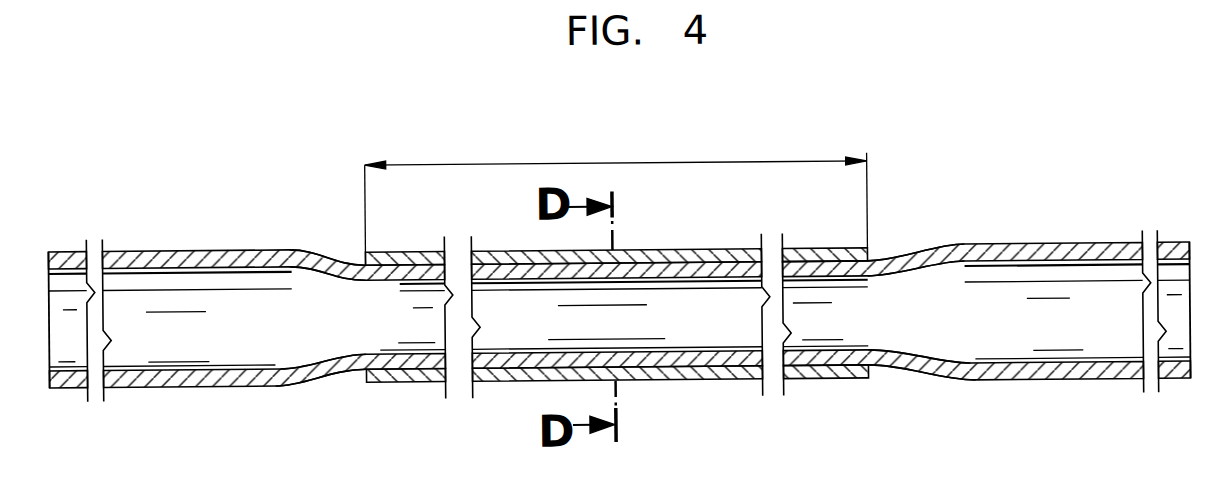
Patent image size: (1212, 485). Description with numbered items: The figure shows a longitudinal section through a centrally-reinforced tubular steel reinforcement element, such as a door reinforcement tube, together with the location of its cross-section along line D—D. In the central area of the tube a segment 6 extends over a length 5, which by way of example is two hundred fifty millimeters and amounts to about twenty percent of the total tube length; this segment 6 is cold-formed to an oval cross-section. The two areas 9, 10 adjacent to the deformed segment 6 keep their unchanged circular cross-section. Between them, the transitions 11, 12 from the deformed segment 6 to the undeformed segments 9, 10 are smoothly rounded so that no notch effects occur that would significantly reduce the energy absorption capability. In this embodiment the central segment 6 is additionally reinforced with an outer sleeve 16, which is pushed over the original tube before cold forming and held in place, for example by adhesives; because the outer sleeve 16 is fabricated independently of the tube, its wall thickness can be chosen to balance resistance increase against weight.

The length 5 is at (557, 163).
The segment 6 is at (518, 379).
The undeformed segment 9 is at (140, 251).
The undeformed segment 10 is at (1085, 246).
The transition 11 is at (337, 256).
The transition 12 is at (912, 258).
The outer sleeve 16 is at (745, 381).